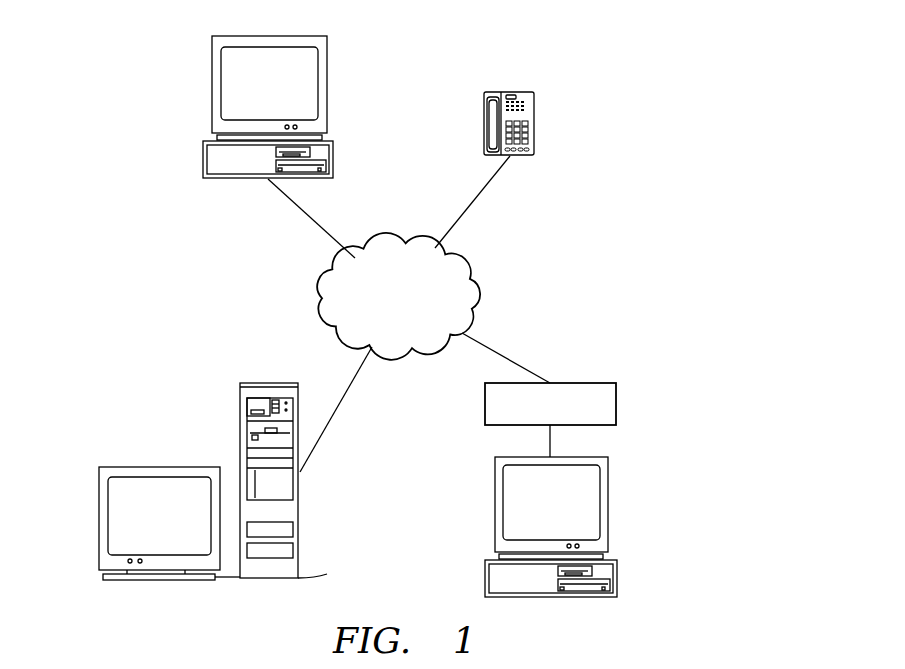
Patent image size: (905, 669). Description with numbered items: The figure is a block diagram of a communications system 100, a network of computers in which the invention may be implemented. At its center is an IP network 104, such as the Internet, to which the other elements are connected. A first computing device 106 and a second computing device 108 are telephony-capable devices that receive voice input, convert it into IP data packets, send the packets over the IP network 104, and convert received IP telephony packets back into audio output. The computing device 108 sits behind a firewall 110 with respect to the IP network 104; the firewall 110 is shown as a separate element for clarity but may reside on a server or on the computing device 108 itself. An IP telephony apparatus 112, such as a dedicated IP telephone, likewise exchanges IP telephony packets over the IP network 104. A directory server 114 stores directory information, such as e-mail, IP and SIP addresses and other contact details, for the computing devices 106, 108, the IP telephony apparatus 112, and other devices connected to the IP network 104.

The communications system 100 is at (708, 142).
The IP network 104 is at (478, 294).
The computing device 106 is at (212, 88).
The computing device 108 is at (609, 505).
The firewall 110 is at (617, 405).
The IP telephony apparatus 112 is at (534, 124).
The directory server 114 is at (99, 517).